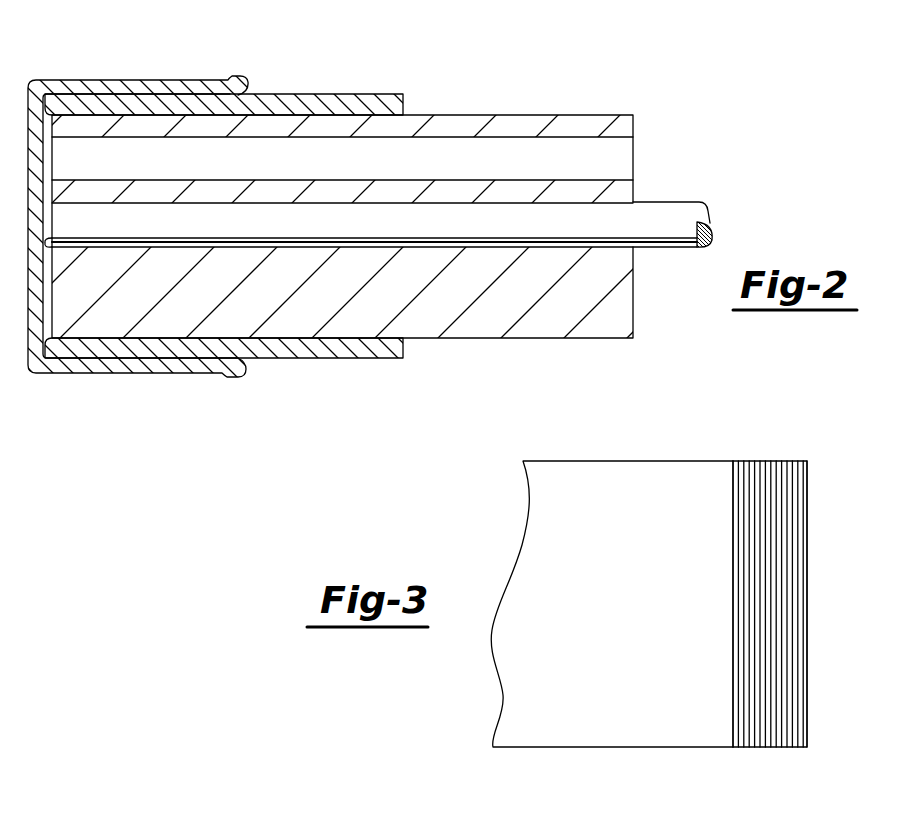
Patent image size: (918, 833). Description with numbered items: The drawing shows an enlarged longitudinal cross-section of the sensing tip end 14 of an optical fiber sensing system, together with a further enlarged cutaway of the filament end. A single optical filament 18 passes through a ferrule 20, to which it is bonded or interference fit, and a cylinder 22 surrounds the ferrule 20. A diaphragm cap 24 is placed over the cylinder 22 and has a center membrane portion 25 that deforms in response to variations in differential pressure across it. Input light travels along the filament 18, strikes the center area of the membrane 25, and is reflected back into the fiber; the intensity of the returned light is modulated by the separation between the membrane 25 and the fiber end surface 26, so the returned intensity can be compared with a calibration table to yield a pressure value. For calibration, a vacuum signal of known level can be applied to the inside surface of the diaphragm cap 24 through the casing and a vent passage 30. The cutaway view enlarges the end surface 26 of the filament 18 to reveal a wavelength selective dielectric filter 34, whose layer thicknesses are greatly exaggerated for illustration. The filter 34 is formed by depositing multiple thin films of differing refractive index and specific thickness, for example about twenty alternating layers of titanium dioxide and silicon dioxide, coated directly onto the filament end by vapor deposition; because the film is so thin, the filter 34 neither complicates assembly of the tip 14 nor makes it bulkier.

In FIG. 2, the sensing tip end 14 is at (333, 78).
In FIG. 2, the optical filament 18 is at (662, 202).
In FIG. 3, the optical filament 18 is at (668, 461).
In FIG. 2, the ferrule 20 is at (460, 113).
In FIG. 2, the cylinder 22 is at (297, 358).
In FIG. 2, the diaphragm cap 24 is at (173, 80).
In FIG. 2, the center membrane portion 25 is at (28, 300).
In FIG. 2, the fiber end surface 26 is at (47, 250).
In FIG. 3, the fiber end surface 26 is at (736, 740).
In FIG. 2, the vent passage 30 is at (526, 138).
In FIG. 3, the wavelength selective dielectric filter 34 is at (807, 461).